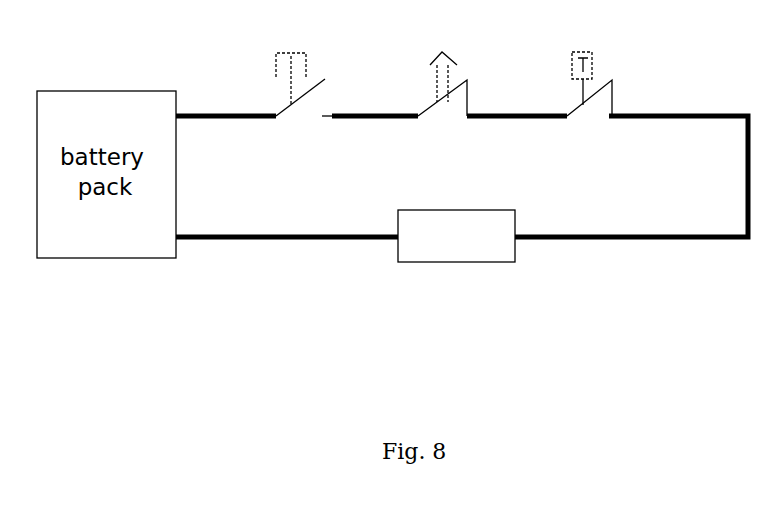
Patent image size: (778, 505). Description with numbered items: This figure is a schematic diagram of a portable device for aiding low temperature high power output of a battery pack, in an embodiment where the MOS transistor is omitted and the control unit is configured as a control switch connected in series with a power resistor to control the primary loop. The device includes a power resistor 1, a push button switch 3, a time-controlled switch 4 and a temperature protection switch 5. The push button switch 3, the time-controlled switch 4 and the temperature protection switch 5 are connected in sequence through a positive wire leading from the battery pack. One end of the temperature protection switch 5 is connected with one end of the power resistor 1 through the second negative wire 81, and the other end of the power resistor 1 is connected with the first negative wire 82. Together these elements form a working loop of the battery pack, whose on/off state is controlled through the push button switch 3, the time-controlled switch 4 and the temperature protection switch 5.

The power resistor 1 is at (457, 262).
The push button switch 3 is at (283, 103).
The time-controlled switch 4 is at (433, 102).
The temperature protection switch 5 is at (580, 102).
The second negative wire 81 is at (675, 238).
The first negative wire 82 is at (285, 238).